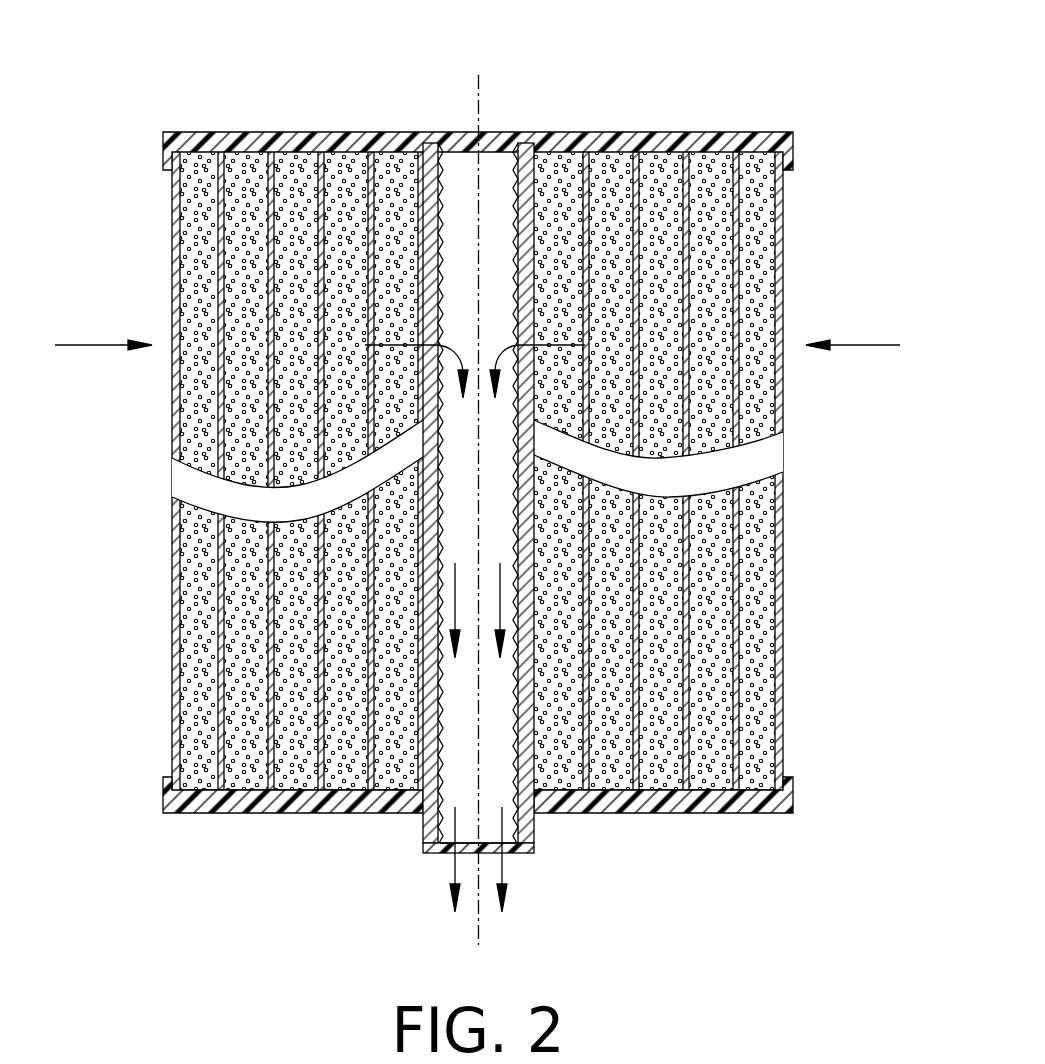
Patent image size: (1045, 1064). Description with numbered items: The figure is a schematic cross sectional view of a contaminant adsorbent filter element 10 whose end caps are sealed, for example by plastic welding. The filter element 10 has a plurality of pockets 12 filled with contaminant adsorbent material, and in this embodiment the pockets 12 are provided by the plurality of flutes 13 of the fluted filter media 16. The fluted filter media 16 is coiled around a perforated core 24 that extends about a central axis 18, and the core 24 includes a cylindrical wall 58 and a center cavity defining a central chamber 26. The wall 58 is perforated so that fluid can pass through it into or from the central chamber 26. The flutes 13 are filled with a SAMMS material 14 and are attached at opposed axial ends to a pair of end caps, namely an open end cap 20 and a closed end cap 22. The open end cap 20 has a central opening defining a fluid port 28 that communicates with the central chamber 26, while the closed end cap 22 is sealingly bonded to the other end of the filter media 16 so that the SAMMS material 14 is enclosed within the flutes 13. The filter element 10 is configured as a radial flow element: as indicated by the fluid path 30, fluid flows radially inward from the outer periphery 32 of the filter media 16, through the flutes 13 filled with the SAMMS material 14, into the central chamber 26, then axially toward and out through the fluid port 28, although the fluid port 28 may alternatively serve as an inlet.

The filter element 10 is at (481, 481).
The pockets 12 is at (727, 233).
The flutes 13 is at (722, 573).
The SAMMS material 14 is at (763, 378).
The fluted filter media 16 is at (783, 253).
The central axis 18 is at (478, 110).
The open end cap 20 is at (705, 813).
The closed end cap 22 is at (650, 133).
The perforated core 24 is at (452, 133).
The central chamber 26 is at (494, 133).
The fluid port 28 is at (535, 830).
The fluid path 30 is at (88, 345).
The outer periphery 32 is at (172, 210).
The cylindrical wall 58 is at (520, 133).